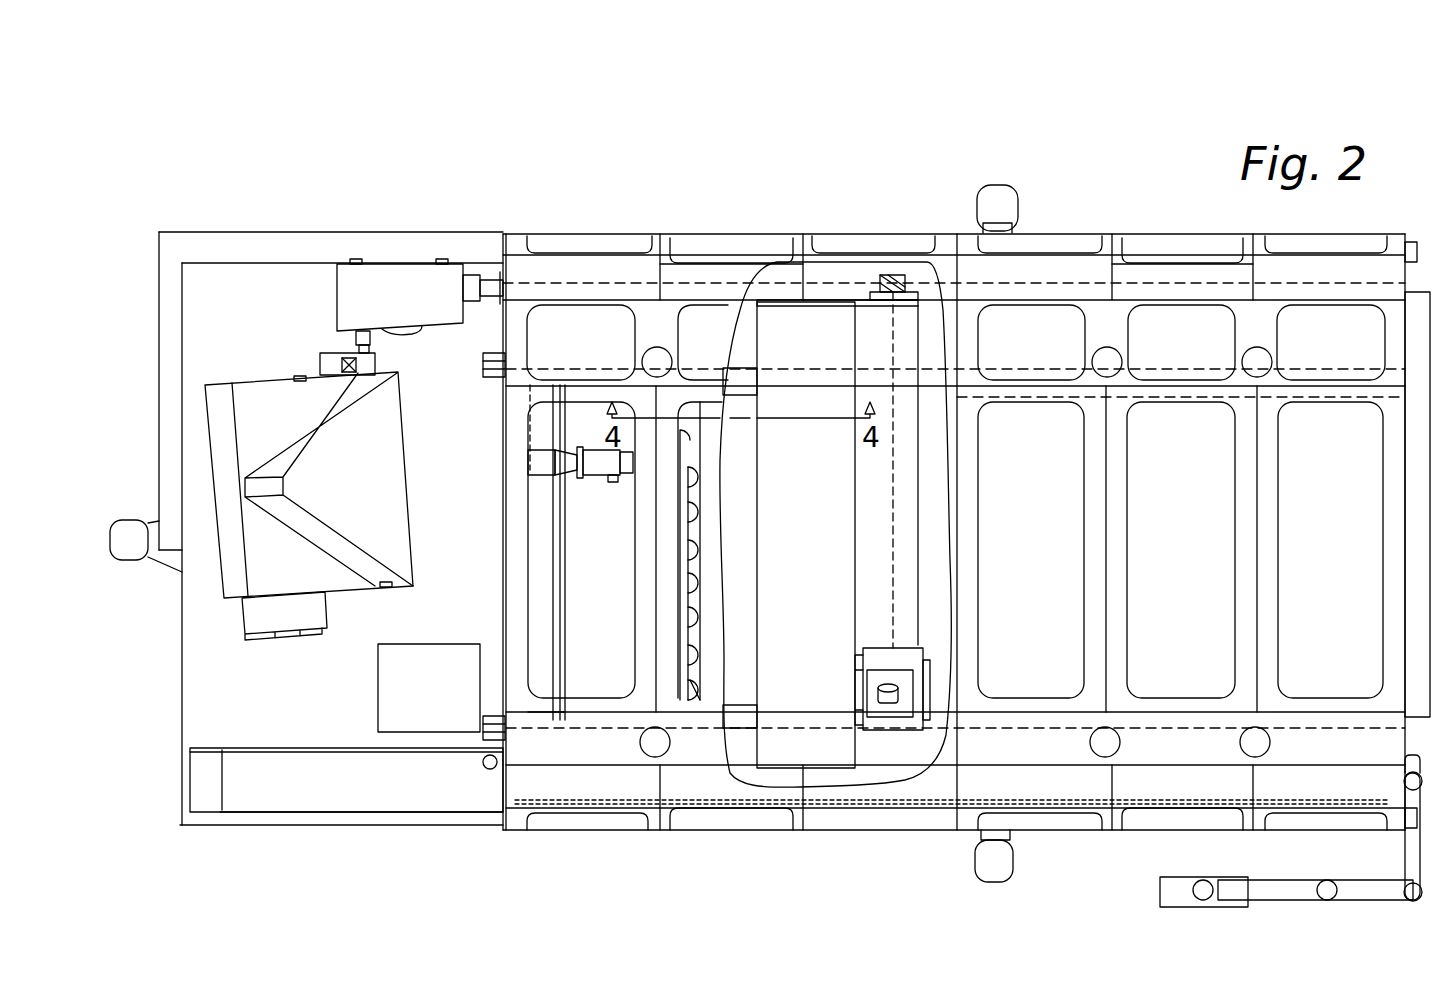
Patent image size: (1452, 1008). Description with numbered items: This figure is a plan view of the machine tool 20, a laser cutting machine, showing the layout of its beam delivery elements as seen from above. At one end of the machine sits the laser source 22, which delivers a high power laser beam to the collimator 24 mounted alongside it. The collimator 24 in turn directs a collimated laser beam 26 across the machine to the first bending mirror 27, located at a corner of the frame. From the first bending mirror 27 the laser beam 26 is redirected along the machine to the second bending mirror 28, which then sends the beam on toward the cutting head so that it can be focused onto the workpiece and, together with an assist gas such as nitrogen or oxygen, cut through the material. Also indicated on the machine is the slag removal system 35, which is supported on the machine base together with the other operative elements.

The machine tool 20 is at (1083, 172).
The laser source 22 is at (263, 408).
The collimator 24 is at (382, 288).
The collimated laser beam 26 is at (735, 283).
The first bending mirror 27 is at (895, 277).
The second bending mirror 28 is at (886, 703).
The slag removal system 35 is at (692, 565).